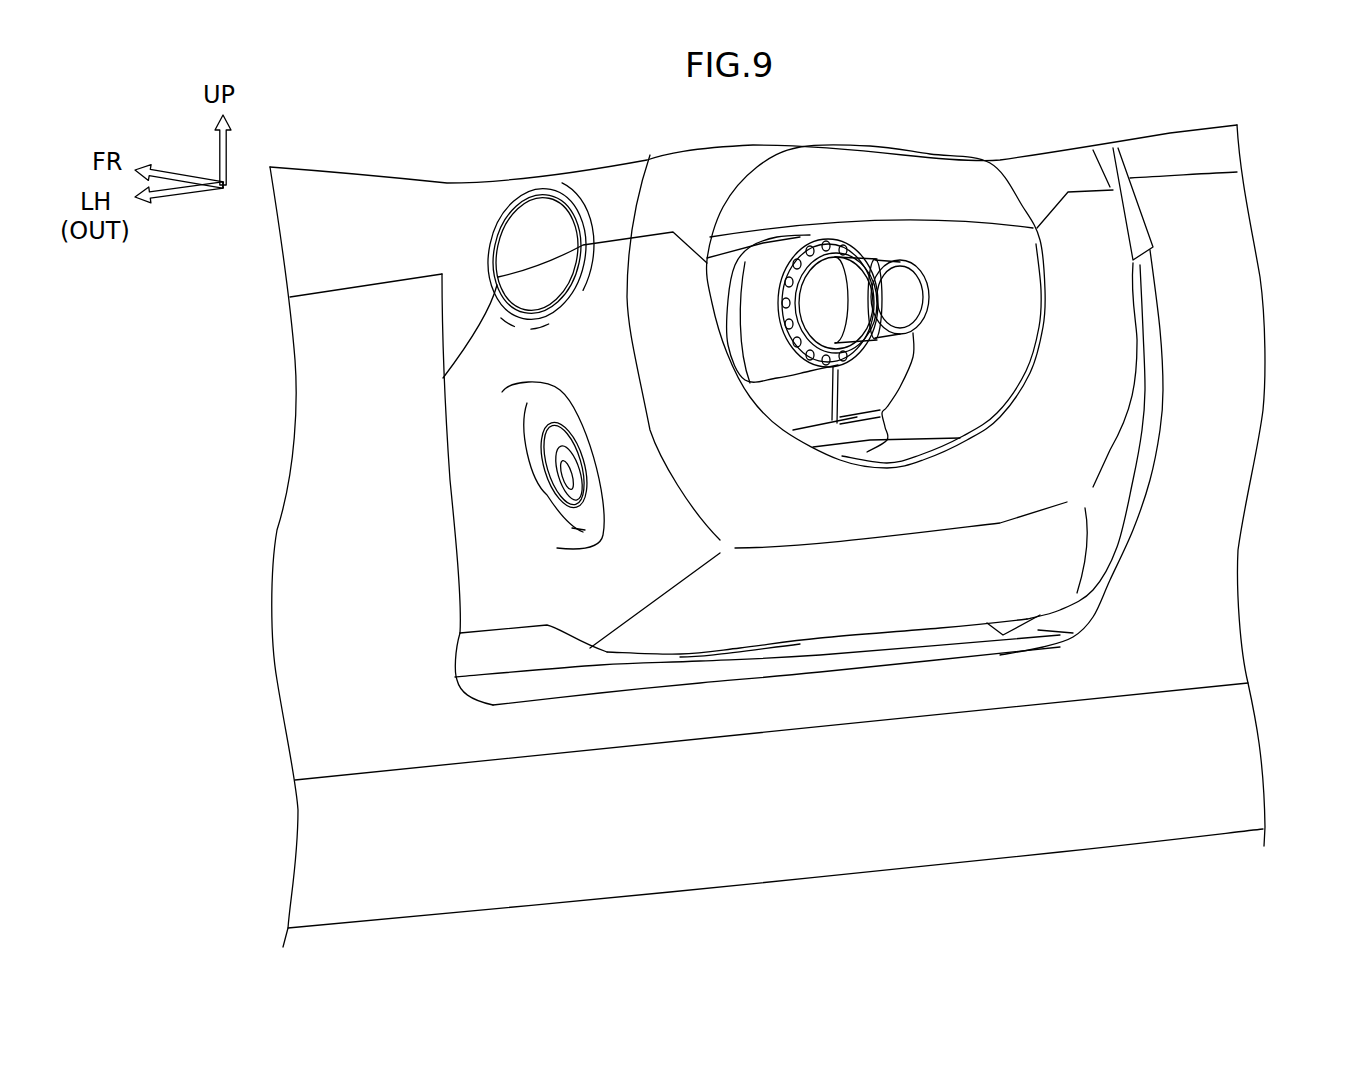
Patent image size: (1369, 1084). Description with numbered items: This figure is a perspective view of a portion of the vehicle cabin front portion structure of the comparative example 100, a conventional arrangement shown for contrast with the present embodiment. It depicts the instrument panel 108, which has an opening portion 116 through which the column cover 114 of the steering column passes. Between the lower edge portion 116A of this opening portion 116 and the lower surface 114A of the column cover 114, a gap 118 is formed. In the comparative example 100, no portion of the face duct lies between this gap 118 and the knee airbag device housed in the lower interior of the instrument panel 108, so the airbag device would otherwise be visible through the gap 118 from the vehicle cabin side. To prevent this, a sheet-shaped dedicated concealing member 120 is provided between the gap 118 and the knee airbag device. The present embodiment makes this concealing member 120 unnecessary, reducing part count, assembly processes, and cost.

The comparative example 100 is at (1280, 740).
The instrument panel 108 is at (1185, 498).
The column cover 114 is at (481, 420).
The lower surface 114A is at (943, 598).
The opening portion 116 is at (462, 478).
The lower edge portion 116A is at (630, 682).
The gap 118 is at (823, 645).
The concealing member 120 is at (782, 650).